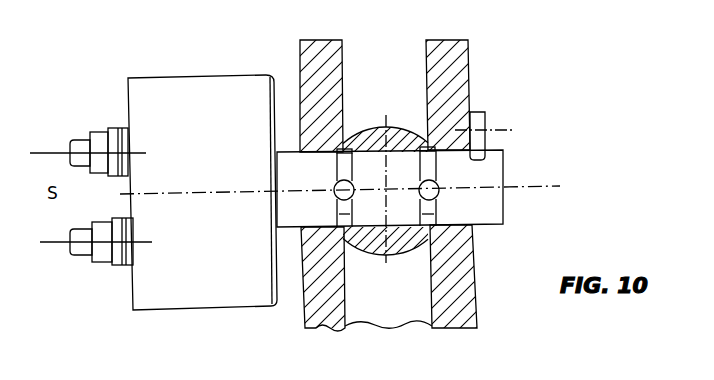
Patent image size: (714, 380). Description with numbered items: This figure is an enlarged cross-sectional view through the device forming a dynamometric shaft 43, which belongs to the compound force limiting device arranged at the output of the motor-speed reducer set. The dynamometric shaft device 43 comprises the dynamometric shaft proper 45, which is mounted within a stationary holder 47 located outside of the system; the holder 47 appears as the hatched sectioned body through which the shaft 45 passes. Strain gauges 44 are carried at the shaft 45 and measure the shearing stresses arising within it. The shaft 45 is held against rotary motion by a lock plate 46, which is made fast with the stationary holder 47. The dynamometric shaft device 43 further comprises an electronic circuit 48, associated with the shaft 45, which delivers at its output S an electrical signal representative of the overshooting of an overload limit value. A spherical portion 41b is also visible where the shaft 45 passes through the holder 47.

The ball (spherical bearing element) 41b is at (377, 128).
The dynamometric shaft device 43 is at (153, 218).
The strain gauges 44 is at (345, 159).
The dynamometric shaft proper 45 is at (492, 212).
The lock plate 46 is at (478, 112).
The stationary holder 47 is at (437, 78).
The electronic circuit 48 is at (202, 192).